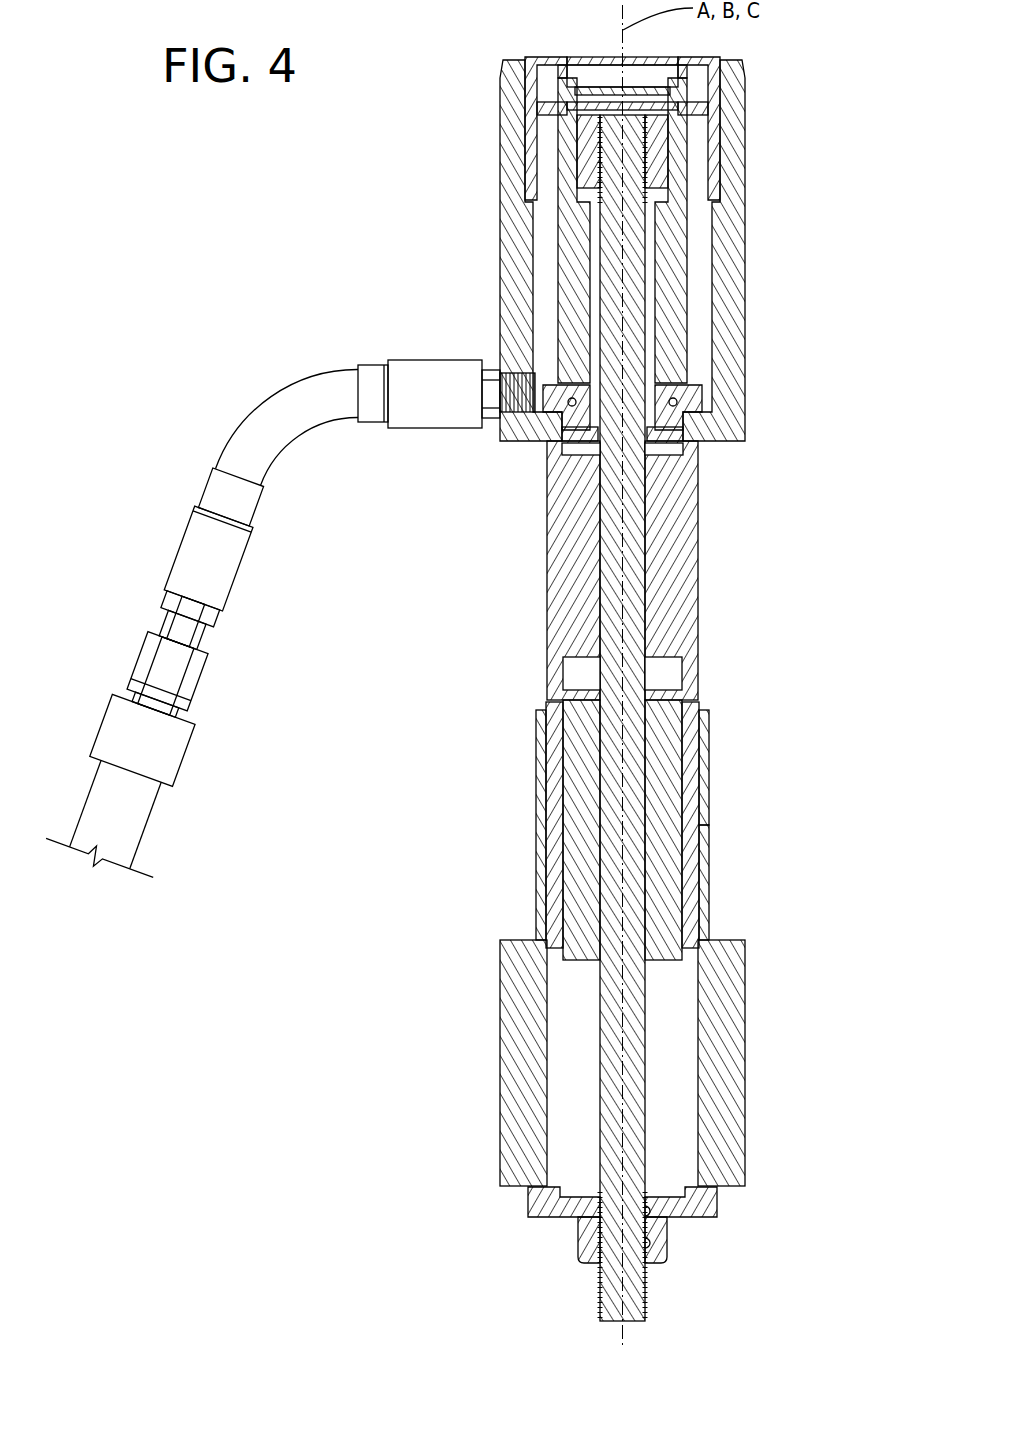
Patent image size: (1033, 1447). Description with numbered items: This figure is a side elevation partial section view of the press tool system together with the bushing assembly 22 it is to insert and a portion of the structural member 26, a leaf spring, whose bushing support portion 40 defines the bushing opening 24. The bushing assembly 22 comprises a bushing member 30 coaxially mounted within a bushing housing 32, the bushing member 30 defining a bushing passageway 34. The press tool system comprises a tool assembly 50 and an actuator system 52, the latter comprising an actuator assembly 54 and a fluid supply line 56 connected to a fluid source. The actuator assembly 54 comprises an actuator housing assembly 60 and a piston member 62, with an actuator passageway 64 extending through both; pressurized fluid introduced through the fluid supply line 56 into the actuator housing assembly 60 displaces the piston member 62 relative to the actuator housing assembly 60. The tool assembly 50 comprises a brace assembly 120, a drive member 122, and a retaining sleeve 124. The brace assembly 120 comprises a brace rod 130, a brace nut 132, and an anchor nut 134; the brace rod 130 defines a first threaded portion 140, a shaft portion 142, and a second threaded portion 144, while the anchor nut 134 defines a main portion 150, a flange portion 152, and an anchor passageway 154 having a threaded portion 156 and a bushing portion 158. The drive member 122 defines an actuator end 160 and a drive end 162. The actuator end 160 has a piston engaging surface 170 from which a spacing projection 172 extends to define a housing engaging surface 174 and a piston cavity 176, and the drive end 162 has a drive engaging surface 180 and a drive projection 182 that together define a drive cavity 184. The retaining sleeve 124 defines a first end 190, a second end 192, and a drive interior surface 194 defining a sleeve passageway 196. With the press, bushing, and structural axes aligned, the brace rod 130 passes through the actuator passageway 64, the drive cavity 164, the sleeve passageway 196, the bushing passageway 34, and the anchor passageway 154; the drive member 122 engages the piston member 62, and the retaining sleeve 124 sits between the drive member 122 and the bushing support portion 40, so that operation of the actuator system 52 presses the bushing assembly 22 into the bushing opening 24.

The bushing assembly 22 is at (540, 793).
The bushing opening 24 is at (680, 1050).
The structural member 26 is at (720, 1085).
The bushing member 30 is at (665, 738).
The bushing housing 32 is at (692, 763).
The bushing passageway 34 is at (635, 777).
The bushing support portion 40 is at (500, 1012).
The tool assembly 50 is at (515, 530).
The actuator system 52 is at (478, 165).
The actuator assembly 54 is at (497, 220).
The fluid supply line 56 is at (262, 417).
The actuator housing assembly 60 is at (497, 262).
The piston member 62 is at (688, 268).
The actuator passageway 64 is at (653, 300).
The brace assembly 120 is at (560, 1287).
The drive member 122 is at (545, 577).
The retaining sleeve 124 is at (707, 813).
The brace rod 130 is at (643, 552).
The brace nut 132 is at (575, 140).
The anchor nut 134 is at (523, 1215).
The first threaded portion 140 is at (647, 143).
The shaft portion 142 is at (635, 843).
The second threaded portion 144 is at (637, 1288).
The main portion 150 is at (580, 1238).
The flange portion 152 is at (708, 1200).
The anchor passageway 154 is at (648, 1226).
The threaded portion 156 is at (646, 1250).
The bushing portion 158 is at (668, 1190).
The actuator end 160 is at (548, 455).
The drive end 162 is at (545, 688).
The drive cavity 164 is at (648, 585).
The piston engaging surface 170 is at (688, 405).
The spacing projection 172 is at (665, 445).
The housing engaging surface 174 is at (700, 430).
The piston cavity 176 is at (655, 455).
The drive engaging surface 180 is at (548, 736).
The drive projection 182 is at (688, 672).
The drive cavity 184 is at (668, 667).
The first end 190 is at (692, 690).
The second end 192 is at (700, 955).
The drive interior surface 194 is at (670, 863).
The sleeve passageway 196 is at (670, 898).